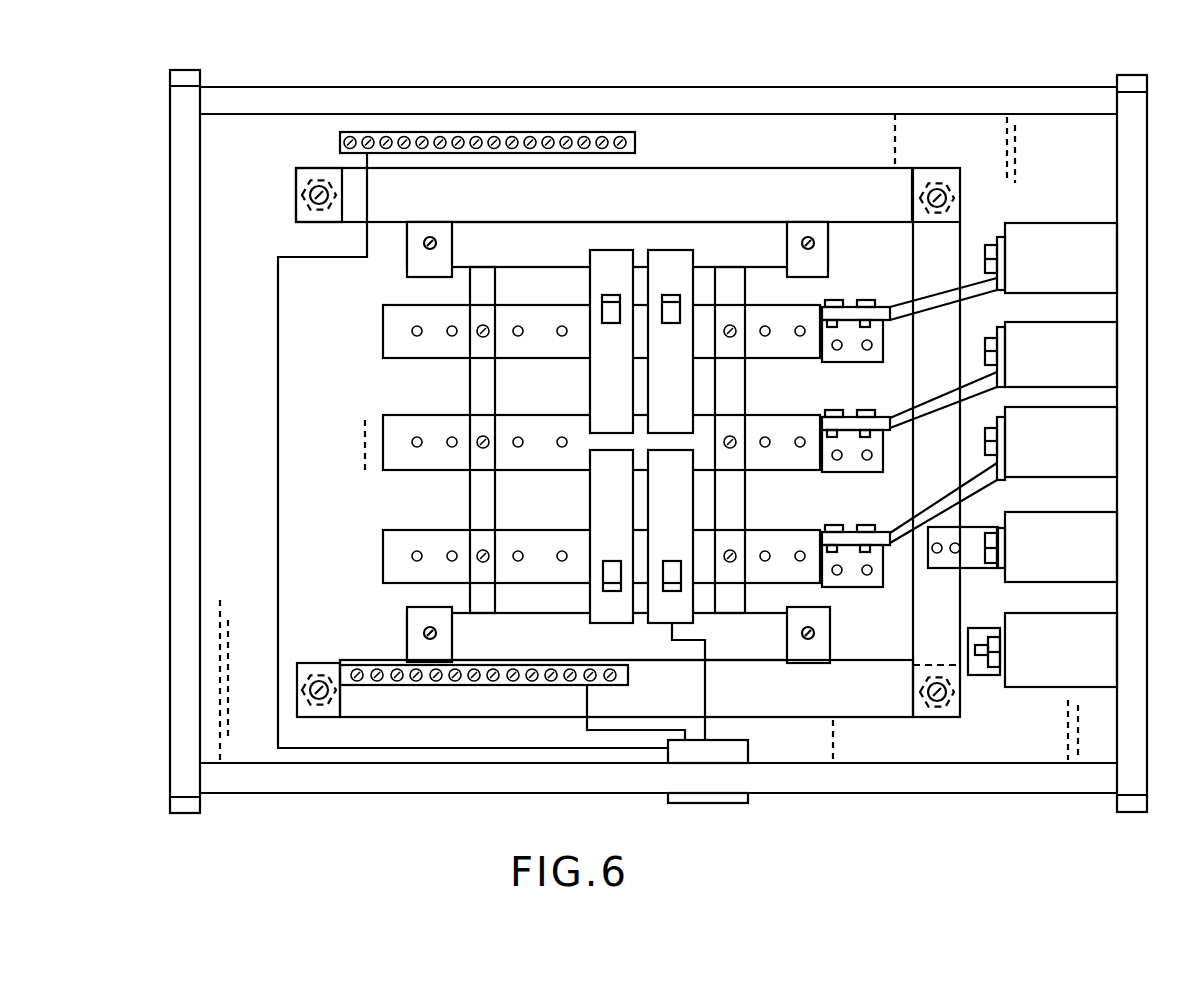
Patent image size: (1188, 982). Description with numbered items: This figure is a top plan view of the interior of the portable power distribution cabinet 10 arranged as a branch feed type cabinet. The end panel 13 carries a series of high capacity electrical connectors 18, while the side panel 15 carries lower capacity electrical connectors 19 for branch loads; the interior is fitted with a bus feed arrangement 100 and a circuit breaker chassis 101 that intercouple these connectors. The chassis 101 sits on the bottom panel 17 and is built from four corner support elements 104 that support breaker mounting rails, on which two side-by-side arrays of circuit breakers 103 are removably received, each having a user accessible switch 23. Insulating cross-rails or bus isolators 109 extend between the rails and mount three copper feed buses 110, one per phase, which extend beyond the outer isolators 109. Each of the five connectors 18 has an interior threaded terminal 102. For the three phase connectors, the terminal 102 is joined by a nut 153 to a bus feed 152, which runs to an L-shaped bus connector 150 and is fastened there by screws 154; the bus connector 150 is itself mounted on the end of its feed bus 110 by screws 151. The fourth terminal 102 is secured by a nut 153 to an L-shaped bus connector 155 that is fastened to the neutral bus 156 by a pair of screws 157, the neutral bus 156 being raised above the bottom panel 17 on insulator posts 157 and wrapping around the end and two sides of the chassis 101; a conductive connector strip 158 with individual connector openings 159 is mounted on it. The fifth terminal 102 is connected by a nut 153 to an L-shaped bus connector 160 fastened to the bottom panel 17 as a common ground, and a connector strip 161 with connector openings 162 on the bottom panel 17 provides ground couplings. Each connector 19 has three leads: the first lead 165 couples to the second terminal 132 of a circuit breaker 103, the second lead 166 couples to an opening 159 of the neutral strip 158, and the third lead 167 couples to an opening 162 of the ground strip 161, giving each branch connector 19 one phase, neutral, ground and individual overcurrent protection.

The portable power distribution cabinet 10 is at (158, 221).
The end panel 13 is at (171, 268).
The side panel 15 is at (940, 96).
The bottom panel 17 is at (244, 352).
The electrical connector 18 is at (1062, 225).
The electrical connector 19 is at (742, 798).
The switch 23 is at (609, 323).
The bus feed arrangement 100 is at (905, 282).
The circuit breaker chassis 101 is at (424, 291).
The threaded terminal 102 is at (985, 258).
The circuit breaker 103 is at (695, 265).
The corner support element 104 is at (418, 238).
The bus isolator 109 is at (470, 367).
The feed bus 110 is at (428, 358).
The second terminal 132 is at (672, 629).
The L-shaped bus connector 150 is at (868, 351).
The screw 151 is at (836, 351).
The bus feed 152 is at (938, 397).
The nut 153 is at (991, 244).
The screw 154 is at (866, 300).
The L-shaped bus connector 155 is at (967, 570).
The neutral bus 156 is at (857, 722).
The insulator post 157 is at (298, 200).
The connector strip 158 is at (415, 686).
The connector opening 159 is at (531, 660).
The L-shaped bus connector 160 is at (982, 676).
The connector strip 161 is at (636, 143).
The connector opening 162 is at (574, 155).
The first lead 165 is at (718, 695).
The second lead 166 is at (598, 698).
The third lead 167 is at (436, 733).